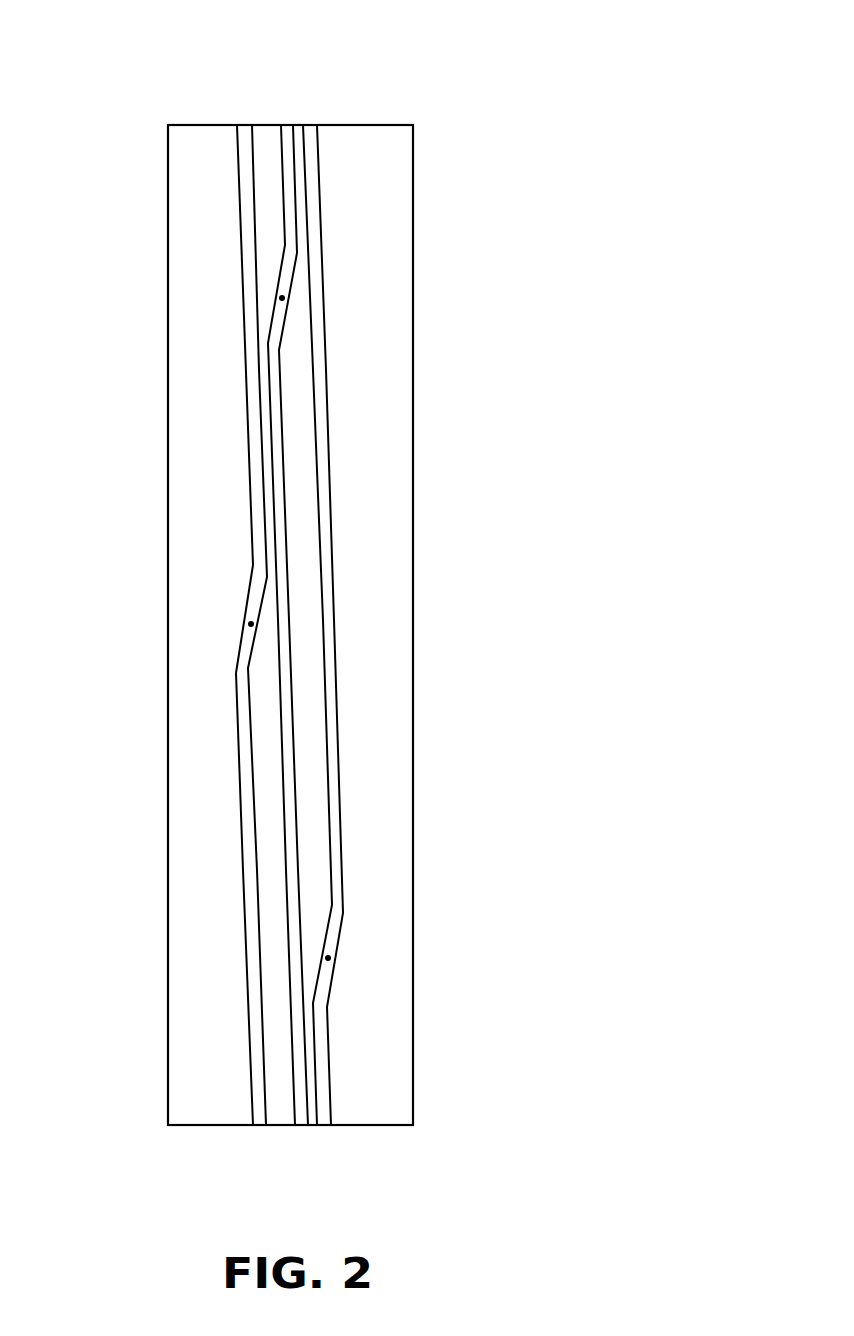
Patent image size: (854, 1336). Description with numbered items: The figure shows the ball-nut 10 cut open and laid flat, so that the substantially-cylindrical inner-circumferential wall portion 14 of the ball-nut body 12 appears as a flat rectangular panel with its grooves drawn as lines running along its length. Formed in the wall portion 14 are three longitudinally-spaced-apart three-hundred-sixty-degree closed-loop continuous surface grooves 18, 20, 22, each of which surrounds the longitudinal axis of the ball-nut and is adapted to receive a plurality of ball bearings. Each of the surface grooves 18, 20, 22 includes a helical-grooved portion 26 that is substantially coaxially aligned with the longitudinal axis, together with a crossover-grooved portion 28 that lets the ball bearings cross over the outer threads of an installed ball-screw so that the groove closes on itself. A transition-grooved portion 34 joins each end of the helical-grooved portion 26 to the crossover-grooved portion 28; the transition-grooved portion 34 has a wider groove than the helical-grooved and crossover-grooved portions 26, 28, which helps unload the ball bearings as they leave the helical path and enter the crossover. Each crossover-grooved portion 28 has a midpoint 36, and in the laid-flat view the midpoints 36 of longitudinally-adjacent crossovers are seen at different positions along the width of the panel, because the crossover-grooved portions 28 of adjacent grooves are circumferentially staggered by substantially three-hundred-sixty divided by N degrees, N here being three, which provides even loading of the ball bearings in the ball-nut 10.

The ball-nut 10 is at (397, 53).
The ball-nut body 12 is at (413, 185).
The inner-circumferential wall portion 14 is at (394, 304).
The 360-degree closed-loop continuous surface groove 18 is at (172, 625).
The 360-degree closed-loop continuous surface groove 20 is at (285, 872).
The 360-degree closed-loop continuous surface groove 22 is at (340, 710).
The helical-grooved portion 26 is at (248, 212).
The crossover-grooved portion 28 is at (243, 628).
The transition-grooved portion 34 is at (253, 566).
The midpoint 36 is at (282, 298).